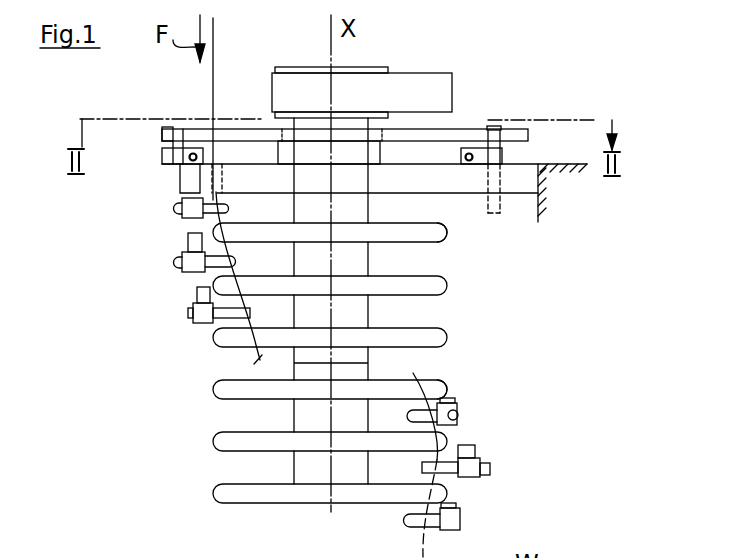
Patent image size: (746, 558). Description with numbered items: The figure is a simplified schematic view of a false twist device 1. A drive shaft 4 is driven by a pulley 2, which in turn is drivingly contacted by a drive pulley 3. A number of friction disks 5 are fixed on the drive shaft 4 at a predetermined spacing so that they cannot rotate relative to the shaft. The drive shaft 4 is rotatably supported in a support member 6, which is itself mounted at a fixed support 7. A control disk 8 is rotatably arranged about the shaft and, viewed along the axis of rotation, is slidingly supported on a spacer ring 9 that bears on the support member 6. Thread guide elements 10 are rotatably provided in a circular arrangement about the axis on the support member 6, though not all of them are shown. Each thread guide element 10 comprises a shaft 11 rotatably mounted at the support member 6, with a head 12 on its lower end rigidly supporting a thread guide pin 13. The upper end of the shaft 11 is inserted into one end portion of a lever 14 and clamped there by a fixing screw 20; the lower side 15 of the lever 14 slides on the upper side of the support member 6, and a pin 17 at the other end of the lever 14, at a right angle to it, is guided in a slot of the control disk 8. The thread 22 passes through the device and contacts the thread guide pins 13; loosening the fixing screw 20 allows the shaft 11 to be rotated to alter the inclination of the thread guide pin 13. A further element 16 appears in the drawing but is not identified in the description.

The false twist device 1 is at (165, 438).
The pulley 2 is at (384, 66).
The drive pulley 3 is at (440, 83).
The drive shaft 4 is at (303, 470).
The friction disks 5 is at (441, 236).
The support member 6 is at (512, 180).
The fixed support 7 is at (564, 185).
The control disk 8 is at (455, 129).
The spacer ring 9 is at (386, 154).
The thread guide elements 10 is at (170, 232).
The shaft 11 is at (457, 402).
The head 12 is at (467, 474).
The thread guide pin 13 is at (448, 470).
The lever 14 is at (163, 160).
The lower side 15 is at (167, 167).
The right clamping block 16 is at (533, 162).
The pin 17 is at (162, 151).
The fixing screw 20 is at (464, 161).
The thread 22 is at (215, 62).